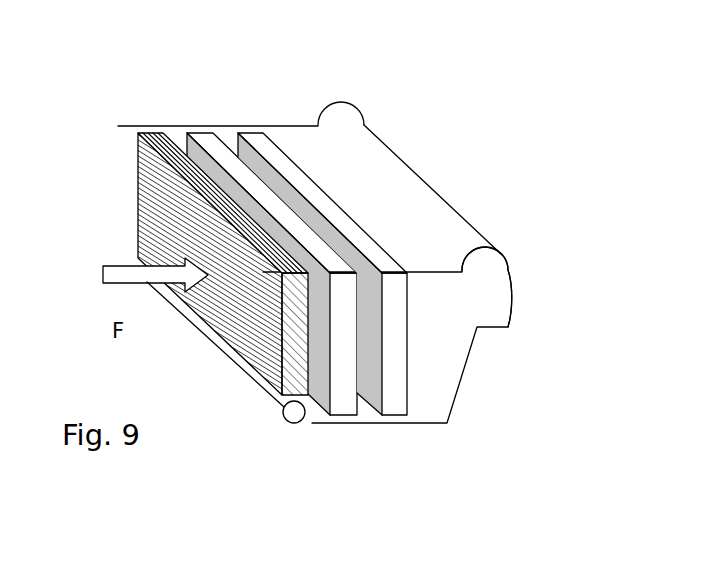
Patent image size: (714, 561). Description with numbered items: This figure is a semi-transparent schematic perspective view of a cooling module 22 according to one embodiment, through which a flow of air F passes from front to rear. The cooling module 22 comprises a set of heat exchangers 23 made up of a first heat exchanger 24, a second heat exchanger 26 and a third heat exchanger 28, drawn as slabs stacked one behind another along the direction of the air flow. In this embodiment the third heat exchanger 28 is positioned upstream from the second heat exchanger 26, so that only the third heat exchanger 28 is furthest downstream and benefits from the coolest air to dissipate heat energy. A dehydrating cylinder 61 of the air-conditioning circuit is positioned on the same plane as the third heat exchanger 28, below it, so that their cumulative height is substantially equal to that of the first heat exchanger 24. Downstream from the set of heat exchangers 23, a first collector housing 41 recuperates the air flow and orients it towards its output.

The cooling module 22 is at (437, 163).
The set of heat exchangers 23 is at (205, 104).
The first heat exchanger 24 is at (400, 395).
The second heat exchanger 26 is at (347, 397).
The third heat exchanger 28 is at (157, 193).
The first collector housing 41 is at (513, 298).
The dehydrating cylinder 61 is at (298, 424).